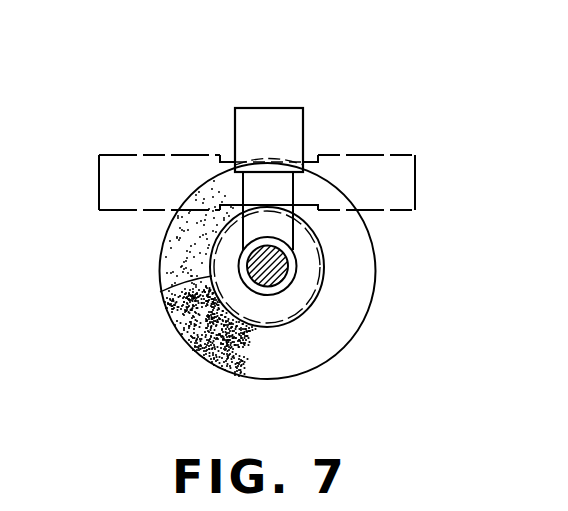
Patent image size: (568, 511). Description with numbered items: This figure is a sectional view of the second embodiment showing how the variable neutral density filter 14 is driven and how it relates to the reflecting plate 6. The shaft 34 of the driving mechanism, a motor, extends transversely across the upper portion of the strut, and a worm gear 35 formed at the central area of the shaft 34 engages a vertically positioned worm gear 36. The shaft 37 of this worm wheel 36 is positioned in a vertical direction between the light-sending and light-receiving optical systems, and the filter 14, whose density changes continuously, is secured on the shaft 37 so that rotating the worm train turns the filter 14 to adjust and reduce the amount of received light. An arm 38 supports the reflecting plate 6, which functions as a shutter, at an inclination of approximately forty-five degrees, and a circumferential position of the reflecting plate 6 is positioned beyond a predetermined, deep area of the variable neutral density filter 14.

The reflecting plate 6 is at (270, 120).
The filter 14 is at (247, 362).
The shaft 34 is at (168, 155).
The worm gear 35 is at (265, 207).
The worm gear 36 is at (160, 292).
The shaft 37 is at (283, 273).
The arm 38 is at (285, 187).